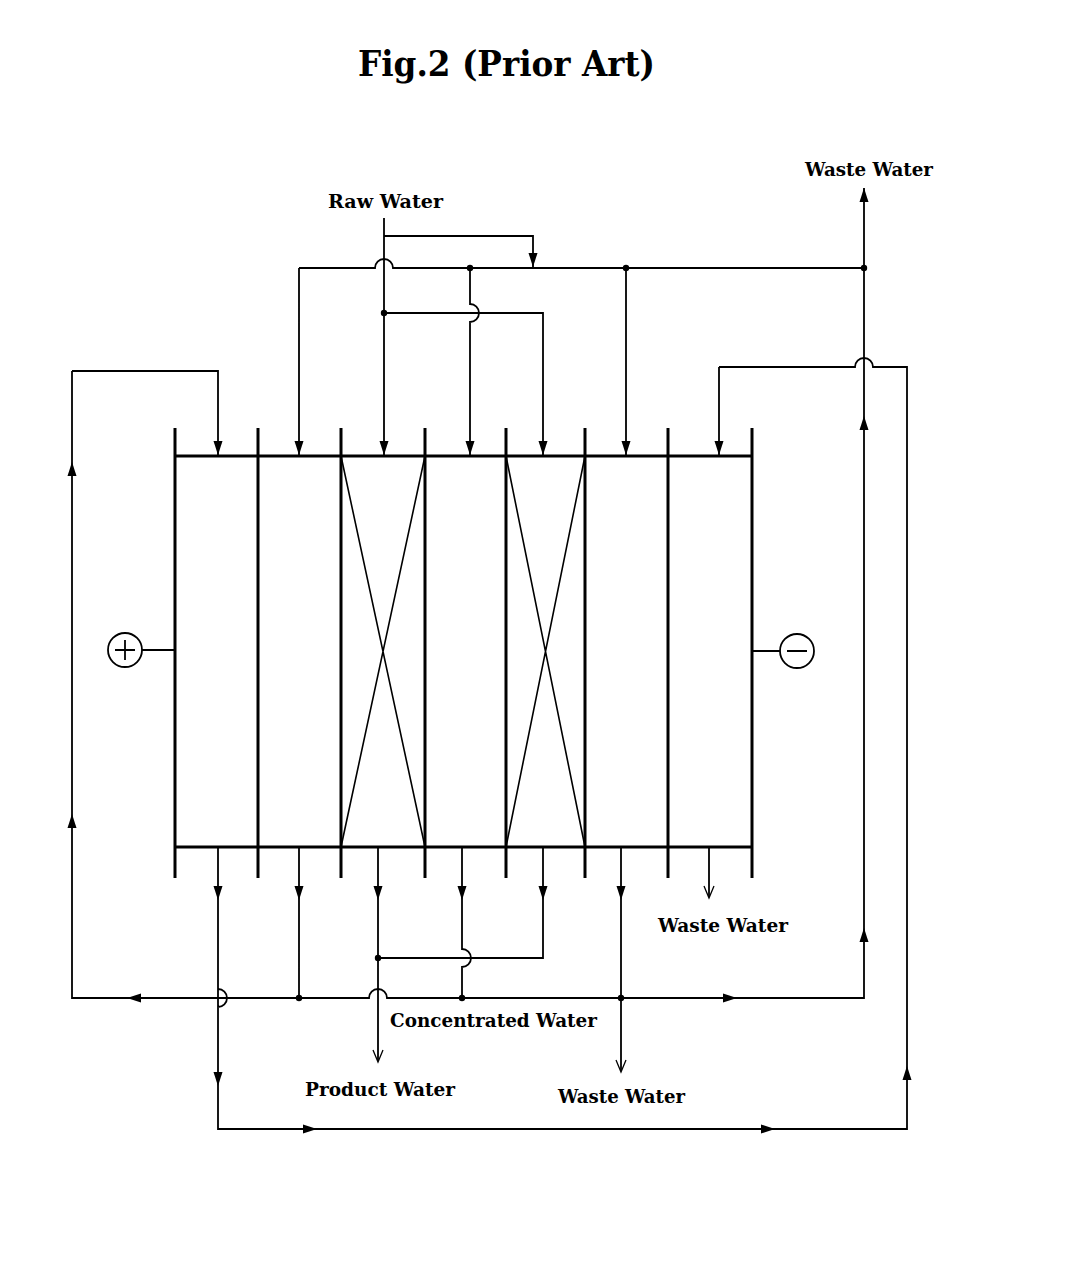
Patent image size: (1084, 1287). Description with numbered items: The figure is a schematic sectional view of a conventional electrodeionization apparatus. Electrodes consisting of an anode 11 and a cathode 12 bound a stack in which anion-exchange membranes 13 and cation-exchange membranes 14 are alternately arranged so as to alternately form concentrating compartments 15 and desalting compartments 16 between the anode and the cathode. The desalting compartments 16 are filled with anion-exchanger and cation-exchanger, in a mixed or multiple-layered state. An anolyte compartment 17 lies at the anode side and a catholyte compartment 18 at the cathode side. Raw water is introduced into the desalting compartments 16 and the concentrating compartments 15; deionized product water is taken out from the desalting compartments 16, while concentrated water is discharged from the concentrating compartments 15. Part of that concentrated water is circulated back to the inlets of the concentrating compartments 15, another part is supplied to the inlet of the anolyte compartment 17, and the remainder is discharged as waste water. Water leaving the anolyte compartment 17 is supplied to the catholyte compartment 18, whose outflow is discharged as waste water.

The anode 11 is at (175, 548).
The cathode 12 is at (752, 550).
The anion-exchange membrane 13 is at (341, 428).
The cation-exchange membrane 14 is at (259, 428).
The concentrating compartment 15 is at (462, 554).
The desalting compartment 16 is at (463, 651).
The anolyte compartment 17 is at (215, 553).
The catholyte compartment 18 is at (704, 556).